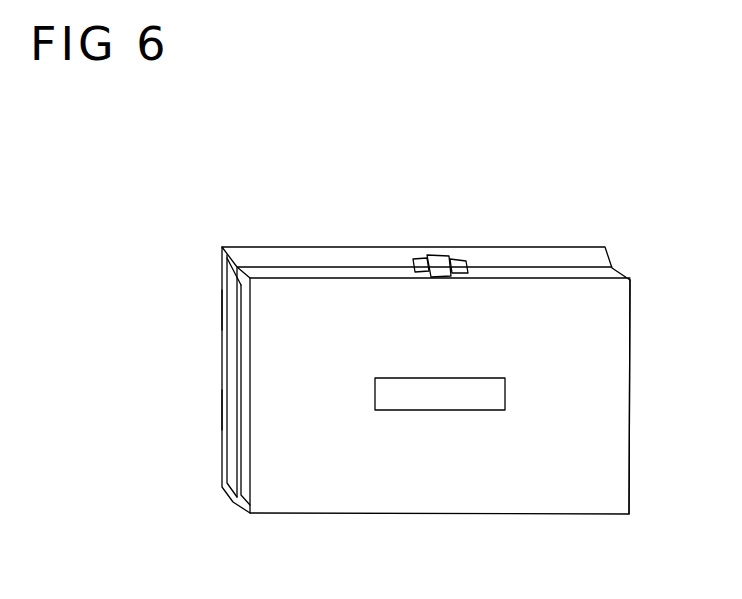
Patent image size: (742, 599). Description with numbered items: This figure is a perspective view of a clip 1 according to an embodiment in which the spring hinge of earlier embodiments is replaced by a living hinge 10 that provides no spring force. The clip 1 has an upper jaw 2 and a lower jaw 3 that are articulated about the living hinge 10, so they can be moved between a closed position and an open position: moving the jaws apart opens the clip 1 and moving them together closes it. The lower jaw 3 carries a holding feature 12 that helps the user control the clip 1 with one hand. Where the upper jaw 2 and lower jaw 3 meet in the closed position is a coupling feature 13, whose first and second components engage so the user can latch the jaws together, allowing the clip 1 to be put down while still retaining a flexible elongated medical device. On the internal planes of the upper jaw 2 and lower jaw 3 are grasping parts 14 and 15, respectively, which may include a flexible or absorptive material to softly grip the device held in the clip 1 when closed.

The clip 1 is at (639, 322).
The upper jaw 2 is at (253, 255).
The lower jaw 3 is at (608, 366).
The living hinge 10 is at (231, 501).
The holding feature 12 is at (438, 400).
The coupling feature 13 is at (438, 260).
The grasping part 14 is at (222, 302).
The grasping part 15 is at (221, 406).